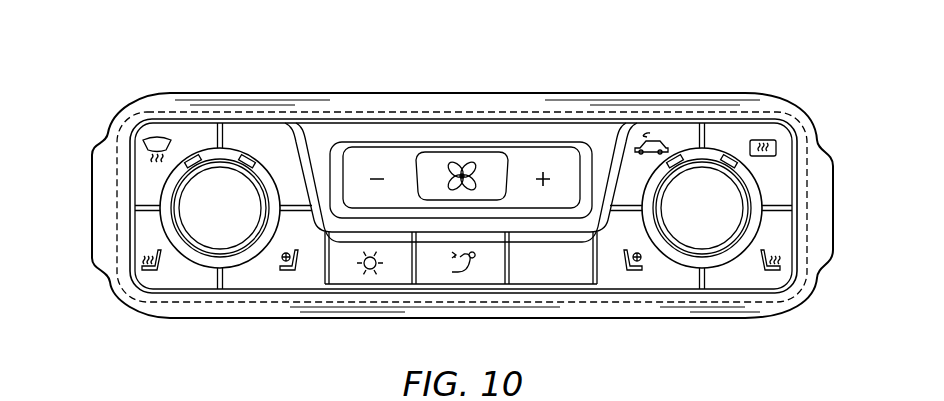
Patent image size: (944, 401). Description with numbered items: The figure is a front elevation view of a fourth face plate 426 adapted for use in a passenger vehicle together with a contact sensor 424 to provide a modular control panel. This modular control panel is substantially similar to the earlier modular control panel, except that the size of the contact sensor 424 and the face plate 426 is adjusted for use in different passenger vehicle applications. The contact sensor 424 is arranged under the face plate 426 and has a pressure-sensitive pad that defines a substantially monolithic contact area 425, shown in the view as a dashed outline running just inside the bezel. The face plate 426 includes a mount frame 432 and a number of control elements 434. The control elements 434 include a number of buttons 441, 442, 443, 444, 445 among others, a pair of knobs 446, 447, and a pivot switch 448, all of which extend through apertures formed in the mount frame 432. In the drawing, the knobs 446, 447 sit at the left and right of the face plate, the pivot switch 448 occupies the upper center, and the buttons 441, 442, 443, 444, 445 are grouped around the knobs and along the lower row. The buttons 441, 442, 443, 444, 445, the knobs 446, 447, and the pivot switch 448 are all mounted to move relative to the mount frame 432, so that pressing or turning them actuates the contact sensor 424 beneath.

The fourth face plate 426 is at (112, 76).
The contact sensor 424 is at (147, 88).
The contact area 425 is at (184, 103).
The mount frame 432 is at (772, 99).
The control elements 434 is at (314, 134).
The button 444 is at (663, 122).
The pivot switch 448 is at (484, 134).
The button 443 is at (783, 162).
The knob 447 is at (761, 188).
The button 442 is at (786, 244).
The knob 446 is at (157, 223).
The button 441 is at (139, 247).
The button 445 is at (348, 294).